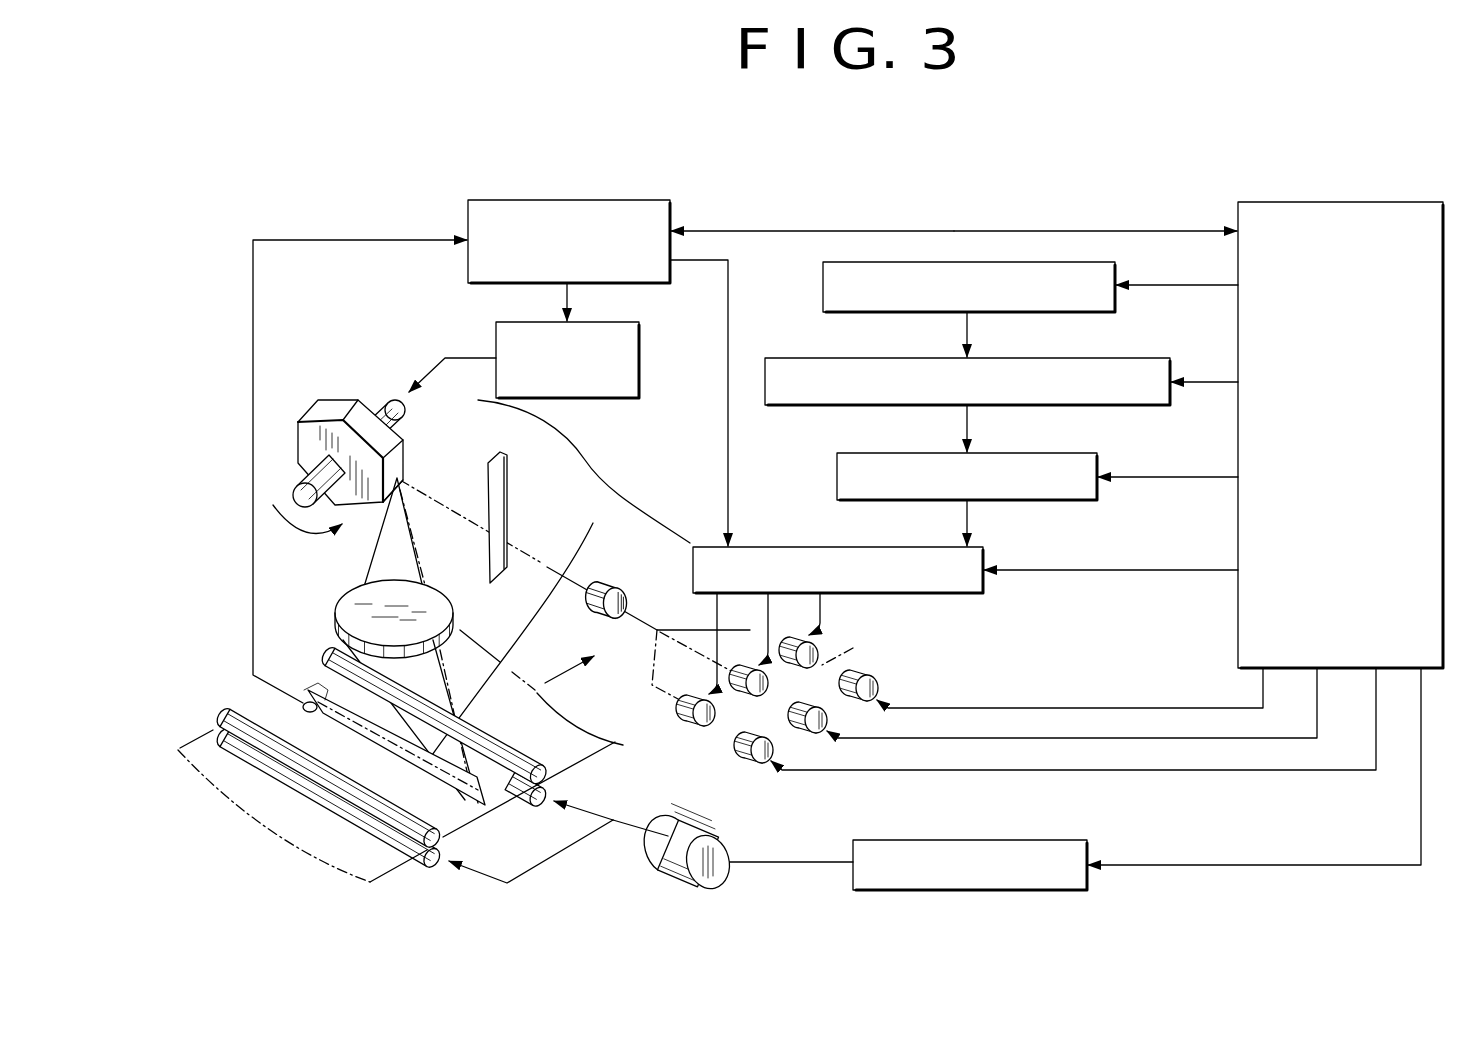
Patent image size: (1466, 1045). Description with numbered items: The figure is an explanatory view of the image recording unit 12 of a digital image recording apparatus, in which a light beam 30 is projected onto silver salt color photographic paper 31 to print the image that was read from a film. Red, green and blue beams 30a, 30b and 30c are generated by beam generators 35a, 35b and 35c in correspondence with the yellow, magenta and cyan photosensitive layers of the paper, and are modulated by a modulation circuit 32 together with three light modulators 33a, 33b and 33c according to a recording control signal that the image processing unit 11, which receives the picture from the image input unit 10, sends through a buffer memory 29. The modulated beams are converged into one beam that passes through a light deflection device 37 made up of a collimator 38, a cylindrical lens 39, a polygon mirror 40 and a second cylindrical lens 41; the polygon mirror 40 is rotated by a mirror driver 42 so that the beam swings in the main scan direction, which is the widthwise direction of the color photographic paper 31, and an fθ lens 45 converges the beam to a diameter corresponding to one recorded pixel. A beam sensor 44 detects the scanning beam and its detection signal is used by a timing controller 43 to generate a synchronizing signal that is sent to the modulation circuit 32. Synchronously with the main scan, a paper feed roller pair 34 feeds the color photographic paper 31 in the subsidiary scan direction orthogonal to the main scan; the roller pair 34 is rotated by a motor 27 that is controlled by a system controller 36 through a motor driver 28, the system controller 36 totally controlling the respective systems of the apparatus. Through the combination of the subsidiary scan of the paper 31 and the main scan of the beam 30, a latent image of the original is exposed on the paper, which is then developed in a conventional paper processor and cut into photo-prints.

The image input unit 10 is at (823, 282).
The image processing unit 11 is at (805, 358).
The image recording unit 12 is at (238, 520).
The motor 27 is at (710, 828).
The motor driver 28 is at (972, 838).
The buffer memory 29 is at (837, 477).
The light beam 30 is at (413, 540).
The red beam 30a is at (866, 663).
The green beam 30b is at (773, 686).
The blue beam 30c is at (778, 692).
The color photographic paper 31 is at (385, 868).
The modulation circuit 32 is at (817, 547).
The light modulator 33a is at (812, 640).
The light modulator 33b is at (730, 692).
The light modulator 33c is at (683, 723).
The paper feed roller pair 34 is at (547, 778).
The beam generator 35a is at (880, 688).
The beam generator 35b is at (829, 720).
The beam generator 35c is at (763, 767).
The system controller 36 is at (1335, 202).
The light deflection device 37 is at (584, 471).
The collimator 38 is at (613, 583).
The cylindrical lens 39 is at (502, 512).
The polygon mirror 40 is at (397, 462).
The second cylindrical lens 41 is at (526, 626).
The mirror driver 42 is at (640, 360).
The timing controller 43 is at (565, 200).
The beam sensor 44 is at (300, 698).
The fθ lens 45 is at (347, 610).